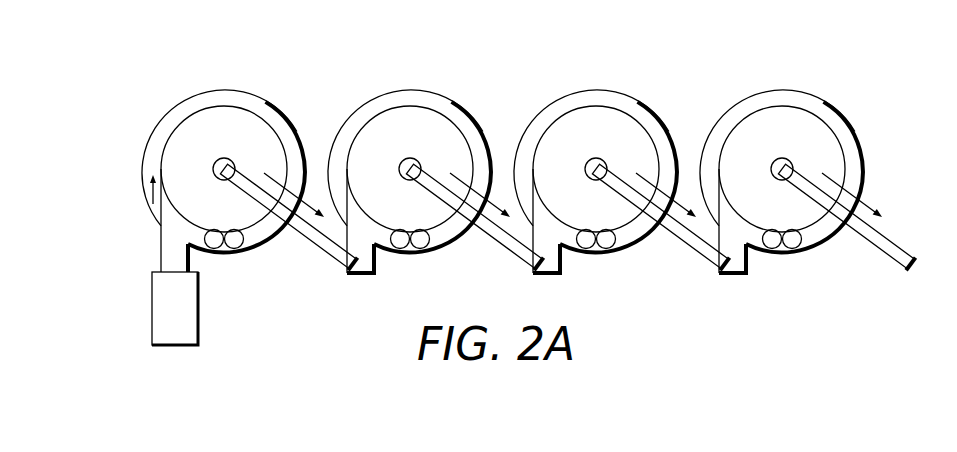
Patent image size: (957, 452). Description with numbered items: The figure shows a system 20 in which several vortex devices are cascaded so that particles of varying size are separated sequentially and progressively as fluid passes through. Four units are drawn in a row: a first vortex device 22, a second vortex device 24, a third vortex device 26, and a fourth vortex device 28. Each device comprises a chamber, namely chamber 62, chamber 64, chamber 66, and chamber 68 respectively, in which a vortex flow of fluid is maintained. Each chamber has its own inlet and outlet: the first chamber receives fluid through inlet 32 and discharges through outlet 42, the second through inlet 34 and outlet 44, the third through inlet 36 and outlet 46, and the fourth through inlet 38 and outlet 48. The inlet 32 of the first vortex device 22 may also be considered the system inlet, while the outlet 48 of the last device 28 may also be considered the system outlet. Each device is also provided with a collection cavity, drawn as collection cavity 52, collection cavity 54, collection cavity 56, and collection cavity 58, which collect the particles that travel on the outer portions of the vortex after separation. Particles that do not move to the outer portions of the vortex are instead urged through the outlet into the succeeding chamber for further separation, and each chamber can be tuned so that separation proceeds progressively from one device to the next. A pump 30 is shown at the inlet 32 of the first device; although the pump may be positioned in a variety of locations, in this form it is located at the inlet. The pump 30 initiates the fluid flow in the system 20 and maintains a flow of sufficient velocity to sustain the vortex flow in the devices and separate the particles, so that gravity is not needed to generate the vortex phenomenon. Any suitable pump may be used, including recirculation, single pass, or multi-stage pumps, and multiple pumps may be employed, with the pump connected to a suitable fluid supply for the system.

The system 20 is at (616, 53).
The first vortex device 22 is at (258, 95).
The second vortex device 24 is at (409, 160).
The third vortex device 26 is at (595, 160).
The fourth vortex device 28 is at (781, 160).
The pump 30 is at (152, 308).
The inlet 32 is at (157, 250).
The inlet 34 is at (374, 239).
The inlet 36 is at (560, 239).
The inlet 38 is at (746, 239).
The outlet 42 is at (330, 256).
The outlet 44 is at (474, 229).
The outlet 46 is at (660, 229).
The outlet 48 is at (846, 229).
The collection cavity 52 is at (223, 250).
The collection cavity 54 is at (410, 260).
The collection cavity 56 is at (596, 260).
The collection cavity 58 is at (782, 260).
The chamber 62 is at (233, 143).
The chamber 64 is at (410, 169).
The chamber 66 is at (596, 169).
The chamber 68 is at (782, 169).